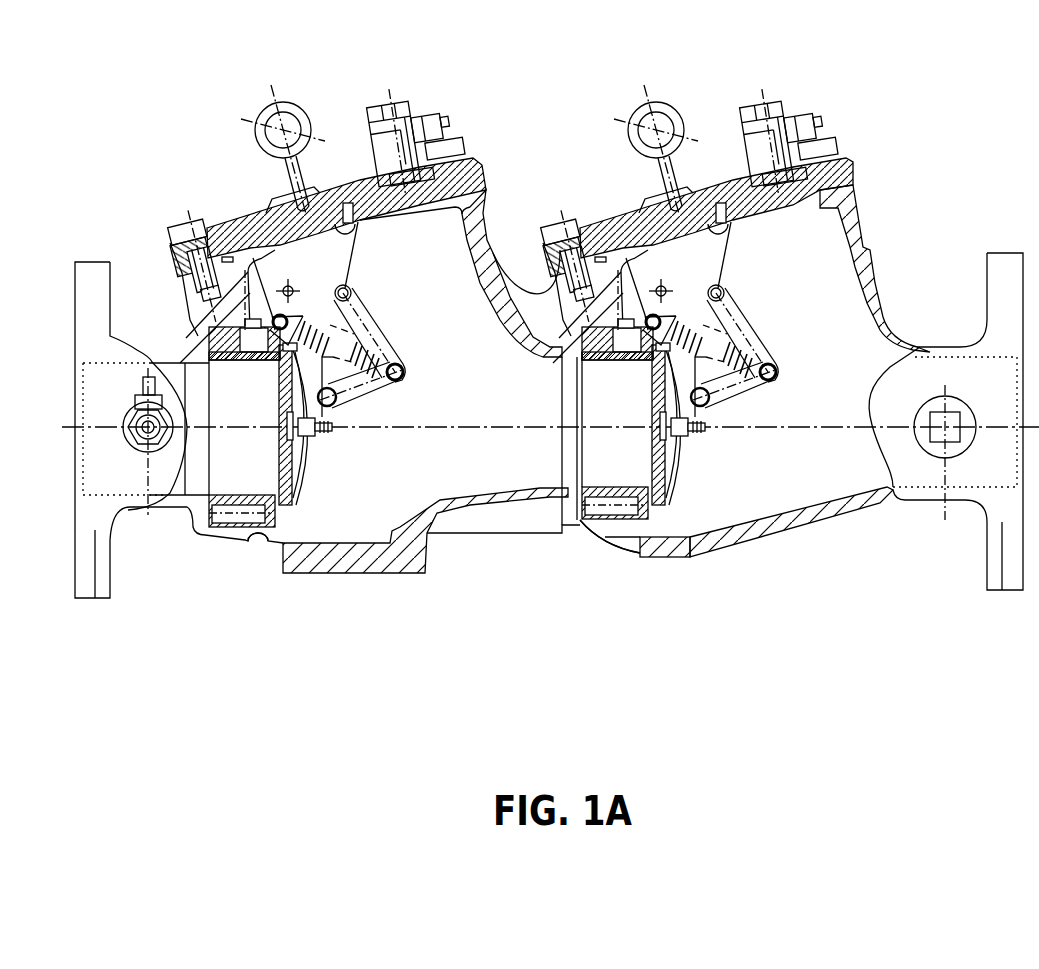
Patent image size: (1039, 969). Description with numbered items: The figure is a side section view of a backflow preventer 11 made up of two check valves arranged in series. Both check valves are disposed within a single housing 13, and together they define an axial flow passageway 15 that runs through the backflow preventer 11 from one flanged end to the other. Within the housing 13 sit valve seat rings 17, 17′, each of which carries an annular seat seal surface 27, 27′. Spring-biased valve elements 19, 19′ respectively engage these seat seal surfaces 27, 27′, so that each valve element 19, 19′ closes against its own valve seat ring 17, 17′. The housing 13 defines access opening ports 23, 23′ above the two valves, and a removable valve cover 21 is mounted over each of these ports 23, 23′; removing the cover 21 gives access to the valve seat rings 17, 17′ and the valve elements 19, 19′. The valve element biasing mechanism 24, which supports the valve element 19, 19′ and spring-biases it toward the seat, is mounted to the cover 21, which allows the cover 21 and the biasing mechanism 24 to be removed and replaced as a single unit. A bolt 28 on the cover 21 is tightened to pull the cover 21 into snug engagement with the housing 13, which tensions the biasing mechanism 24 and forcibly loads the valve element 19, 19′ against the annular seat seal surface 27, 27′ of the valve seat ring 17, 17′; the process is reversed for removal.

The backflow preventer 11 is at (970, 148).
The housing 13 is at (754, 518).
The axial flow passageway 15 is at (483, 422).
The valve seat ring 17 is at (228, 522).
The valve seat ring 17′ is at (578, 487).
The valve element 19 is at (300, 470).
The valve element 19′ is at (675, 470).
The valve cover 21 is at (345, 190).
The access opening port 23 is at (435, 190).
The access opening port 23′ is at (835, 222).
The valve element biasing mechanism 24 is at (405, 315).
The annular seat seal surface 27 is at (274, 505).
The annular seat seal surface 27′ is at (648, 497).
The bolt 28 is at (820, 150).